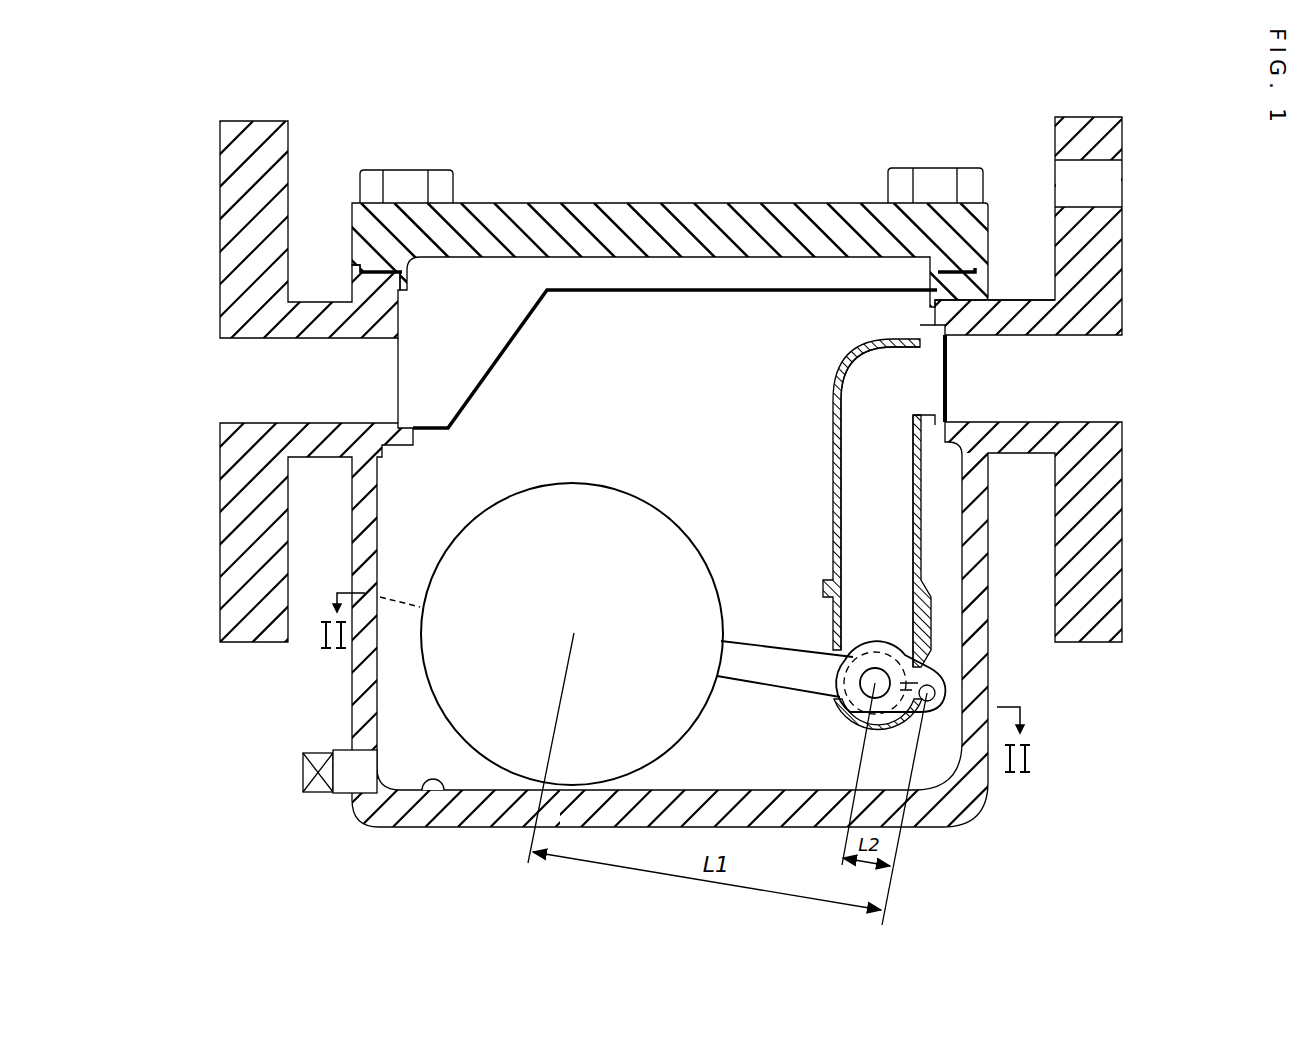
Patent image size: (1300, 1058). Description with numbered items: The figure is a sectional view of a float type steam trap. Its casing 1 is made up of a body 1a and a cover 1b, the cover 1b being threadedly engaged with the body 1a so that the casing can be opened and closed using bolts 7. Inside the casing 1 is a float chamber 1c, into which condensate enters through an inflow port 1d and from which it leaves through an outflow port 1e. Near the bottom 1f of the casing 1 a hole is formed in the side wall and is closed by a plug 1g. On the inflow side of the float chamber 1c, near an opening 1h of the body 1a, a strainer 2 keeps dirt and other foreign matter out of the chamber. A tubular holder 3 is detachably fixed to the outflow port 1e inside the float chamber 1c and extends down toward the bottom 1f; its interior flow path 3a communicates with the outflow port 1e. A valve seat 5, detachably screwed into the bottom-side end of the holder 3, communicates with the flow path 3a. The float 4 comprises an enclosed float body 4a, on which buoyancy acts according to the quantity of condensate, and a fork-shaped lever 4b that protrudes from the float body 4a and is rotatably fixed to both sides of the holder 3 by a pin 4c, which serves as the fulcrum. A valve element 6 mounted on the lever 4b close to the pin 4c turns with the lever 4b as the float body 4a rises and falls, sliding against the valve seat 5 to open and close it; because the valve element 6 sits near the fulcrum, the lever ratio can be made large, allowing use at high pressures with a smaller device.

The casing 1 is at (1015, 130).
The body 1a is at (1052, 227).
The cover 1b is at (845, 200).
The float chamber 1c is at (398, 712).
The inflow port 1d is at (265, 383).
The outflow port 1e is at (1070, 385).
The bottom 1f is at (433, 790).
The plug 1g is at (320, 795).
The opening 1h is at (490, 252).
The strainer 2 is at (598, 290).
The holder 3 is at (925, 545).
The flow path 3a is at (887, 517).
The float 4 is at (650, 427).
The float body 4a is at (607, 495).
The lever 4b is at (763, 653).
The pin 4c is at (950, 698).
The valve seat 5 is at (935, 688).
The valve element 6 is at (862, 686).
The bolts 7 is at (417, 185).